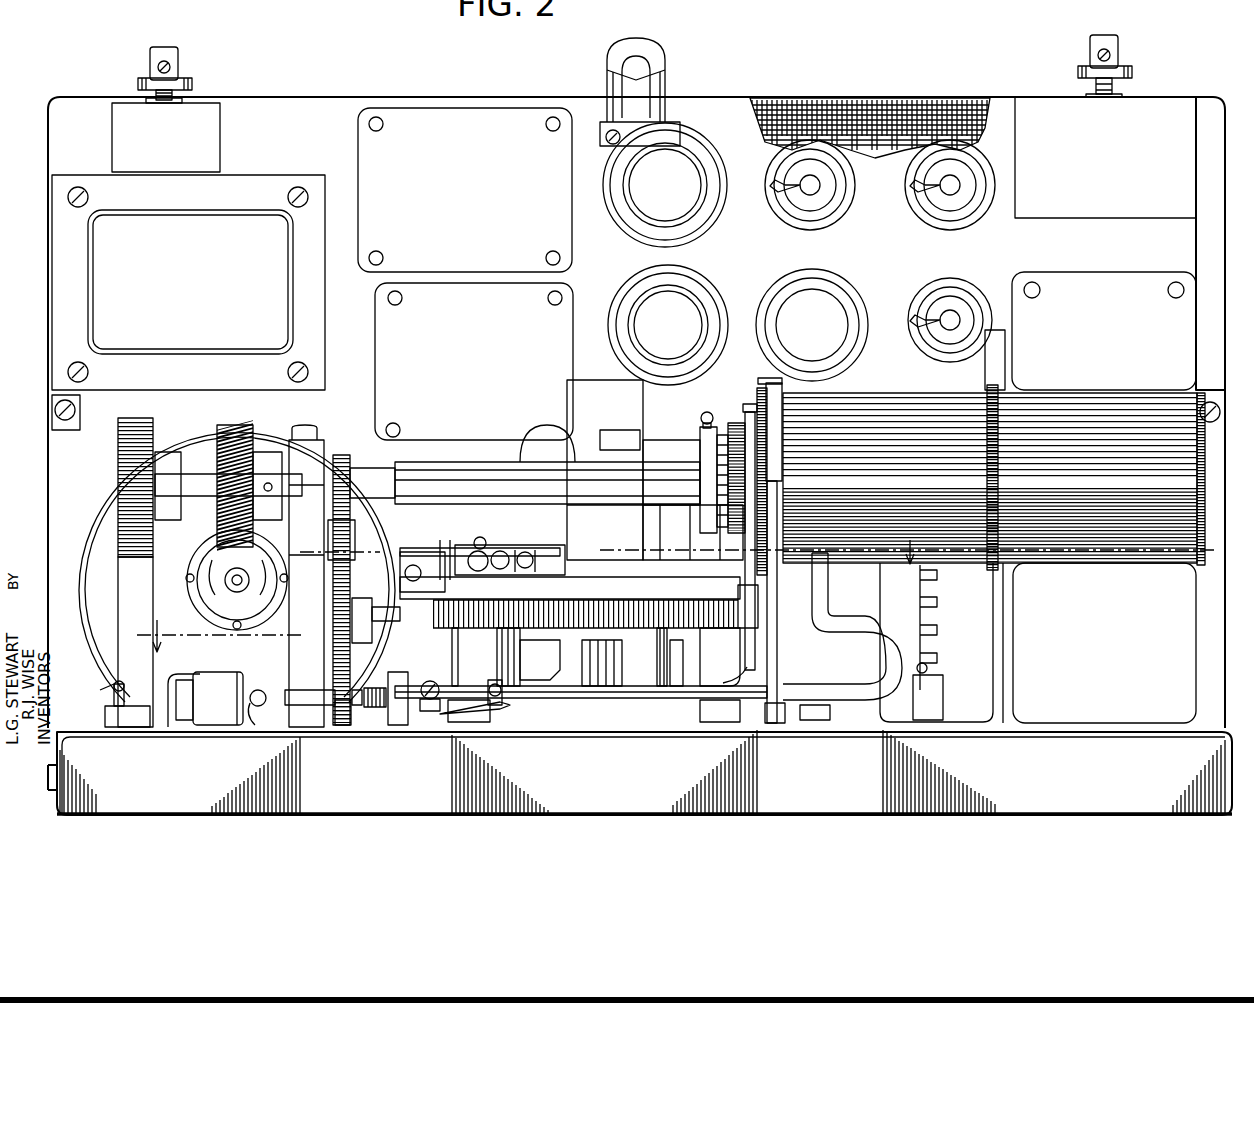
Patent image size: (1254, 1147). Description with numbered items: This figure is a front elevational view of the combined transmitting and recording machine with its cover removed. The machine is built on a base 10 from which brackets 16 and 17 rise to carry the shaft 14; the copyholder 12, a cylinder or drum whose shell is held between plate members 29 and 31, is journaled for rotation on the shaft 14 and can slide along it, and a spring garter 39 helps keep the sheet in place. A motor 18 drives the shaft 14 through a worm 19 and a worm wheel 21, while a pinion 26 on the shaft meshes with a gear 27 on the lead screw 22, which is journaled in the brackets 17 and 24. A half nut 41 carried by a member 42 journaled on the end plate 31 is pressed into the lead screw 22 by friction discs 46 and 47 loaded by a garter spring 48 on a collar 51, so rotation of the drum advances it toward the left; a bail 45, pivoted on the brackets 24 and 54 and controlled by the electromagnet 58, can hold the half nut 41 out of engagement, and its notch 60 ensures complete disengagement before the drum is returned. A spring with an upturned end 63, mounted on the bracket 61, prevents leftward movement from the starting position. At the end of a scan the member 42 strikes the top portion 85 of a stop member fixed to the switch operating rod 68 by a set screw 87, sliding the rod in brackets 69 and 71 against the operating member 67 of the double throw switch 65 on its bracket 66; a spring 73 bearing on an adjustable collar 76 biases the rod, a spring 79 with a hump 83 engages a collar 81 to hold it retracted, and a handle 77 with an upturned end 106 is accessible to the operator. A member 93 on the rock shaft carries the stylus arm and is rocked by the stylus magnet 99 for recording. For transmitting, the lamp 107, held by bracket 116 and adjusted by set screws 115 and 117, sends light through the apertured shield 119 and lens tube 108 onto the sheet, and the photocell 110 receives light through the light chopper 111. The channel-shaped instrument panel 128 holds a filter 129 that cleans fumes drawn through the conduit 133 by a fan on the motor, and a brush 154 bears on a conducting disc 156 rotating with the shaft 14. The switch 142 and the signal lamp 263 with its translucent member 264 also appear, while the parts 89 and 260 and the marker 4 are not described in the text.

The base 10 is at (808, 805).
The copyholder 12 is at (1090, 387).
The shaft 14 is at (436, 506).
The bracket 16 is at (1205, 594).
The bracket 17 is at (320, 440).
The motor 18 is at (160, 674).
The worm 19 is at (210, 562).
The worm wheel 21 is at (232, 425).
The lead screw 22 is at (585, 598).
The bracket 24 is at (778, 655).
The pinion 26 is at (345, 452).
The gear 27 is at (346, 536).
The plate member 29 is at (1197, 566).
The plate member 31 is at (775, 458).
The spring garter 39 is at (999, 445).
The half nut member 41 is at (750, 628).
The member 42 is at (748, 562).
The bail member 45 is at (672, 582).
The friction disc 46 is at (767, 445).
The friction disc 47 is at (747, 405).
The garter spring 48 is at (733, 425).
The collar 51 is at (1005, 353).
The bracket 54 is at (360, 598).
The electromagnet structure 58 is at (676, 664).
The notch 60 is at (425, 560).
The bracket 61 is at (572, 720).
The upturned spring end 63 is at (745, 672).
The double throw switch 65 is at (232, 725).
The bracket 66 is at (168, 700).
The operating member 67 is at (258, 690).
The switch operating rod 68 is at (310, 690).
The bracket 69 is at (412, 725).
The bracket member 71 is at (782, 720).
The spring 73 is at (370, 707).
The adjustable collar 76 is at (350, 726).
The handle 77 is at (905, 662).
The spring 79 is at (505, 716).
The collar 81 is at (500, 684).
The hump 83 is at (480, 722).
The top portion of stop member 85 is at (438, 680).
The set screw 87 is at (428, 680).
The support 89 is at (604, 686).
The member 93 is at (820, 722).
The stylus operating magnet 99 is at (556, 654).
The upturned end 106 is at (822, 580).
The lamp 107 is at (510, 450).
The lens tube 108 is at (642, 452).
The photocell 110 is at (760, 380).
The light chopper 111 is at (938, 608).
The set screw 115 is at (486, 545).
The bracket 116 is at (468, 545).
The set screw 117 is at (475, 570).
The apertured shield 119 is at (580, 390).
The instrument panel 128 is at (300, 112).
The filter 129 is at (850, 148).
The conduit member 133 is at (108, 510).
The switch 142 is at (1102, 40).
The brush 154 is at (125, 636).
The conducting disc 156 is at (122, 458).
The knob 260 is at (163, 50).
The signal lamp 263 is at (608, 88).
The transparent or translucent member 264 is at (645, 42).
The section line 4 is at (528, 584).